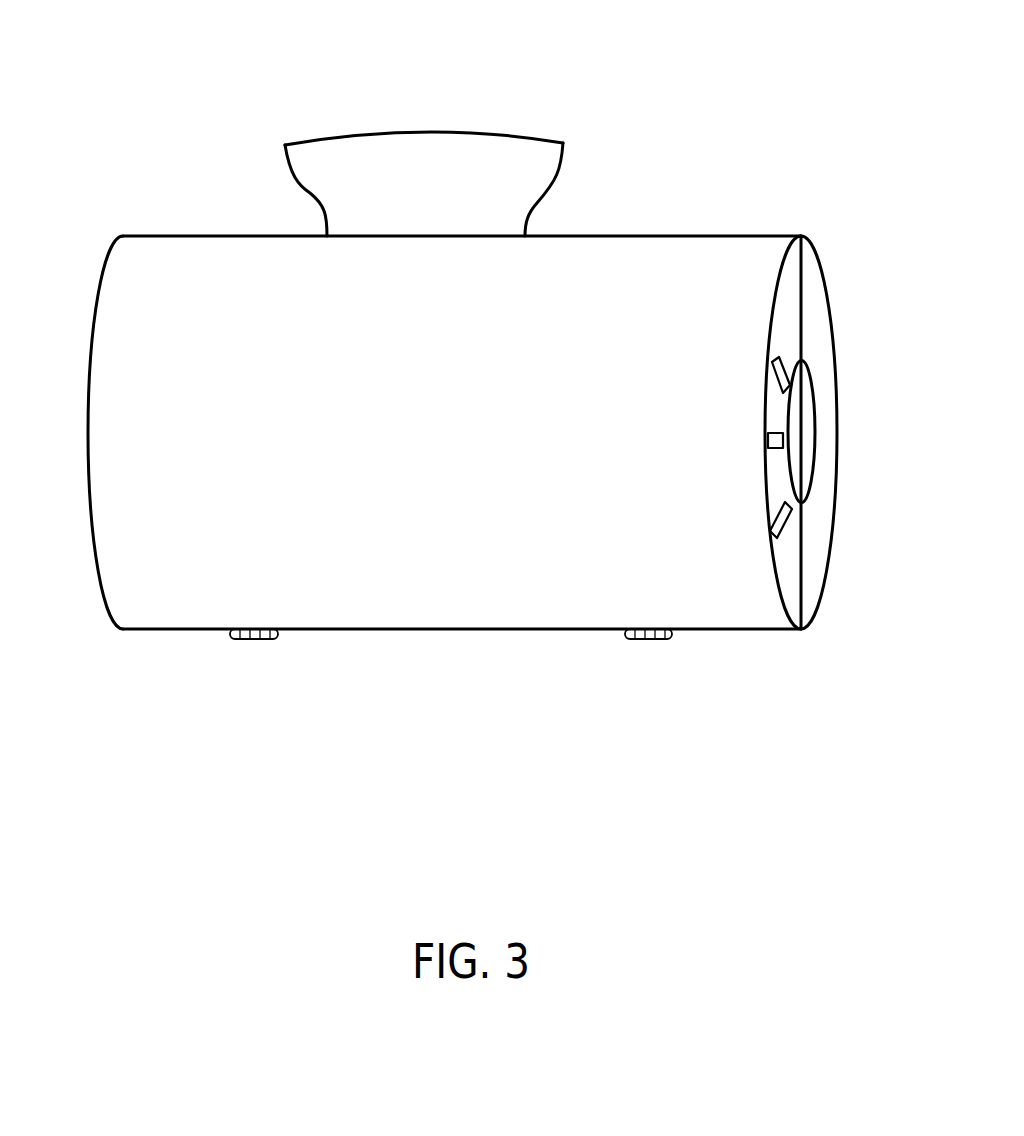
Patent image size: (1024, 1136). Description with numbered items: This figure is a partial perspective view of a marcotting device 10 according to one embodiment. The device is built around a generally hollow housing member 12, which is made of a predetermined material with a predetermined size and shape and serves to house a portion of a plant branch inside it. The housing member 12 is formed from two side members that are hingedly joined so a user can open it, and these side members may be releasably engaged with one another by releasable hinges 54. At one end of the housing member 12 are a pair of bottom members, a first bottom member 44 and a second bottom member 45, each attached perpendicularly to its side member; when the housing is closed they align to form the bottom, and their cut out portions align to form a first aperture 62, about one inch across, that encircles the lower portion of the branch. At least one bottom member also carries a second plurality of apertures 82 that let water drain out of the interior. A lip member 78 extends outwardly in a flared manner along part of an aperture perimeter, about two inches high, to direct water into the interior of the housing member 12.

The marcotting device 10 is at (104, 86).
The housing member 12 is at (737, 273).
The first bottom member 44 is at (797, 572).
The second bottom member 45 is at (837, 457).
The releasable hinges 54 is at (268, 640).
The first aperture 62 is at (802, 428).
The lip member 78 is at (342, 172).
The second plurality of apertures 82 is at (773, 367).